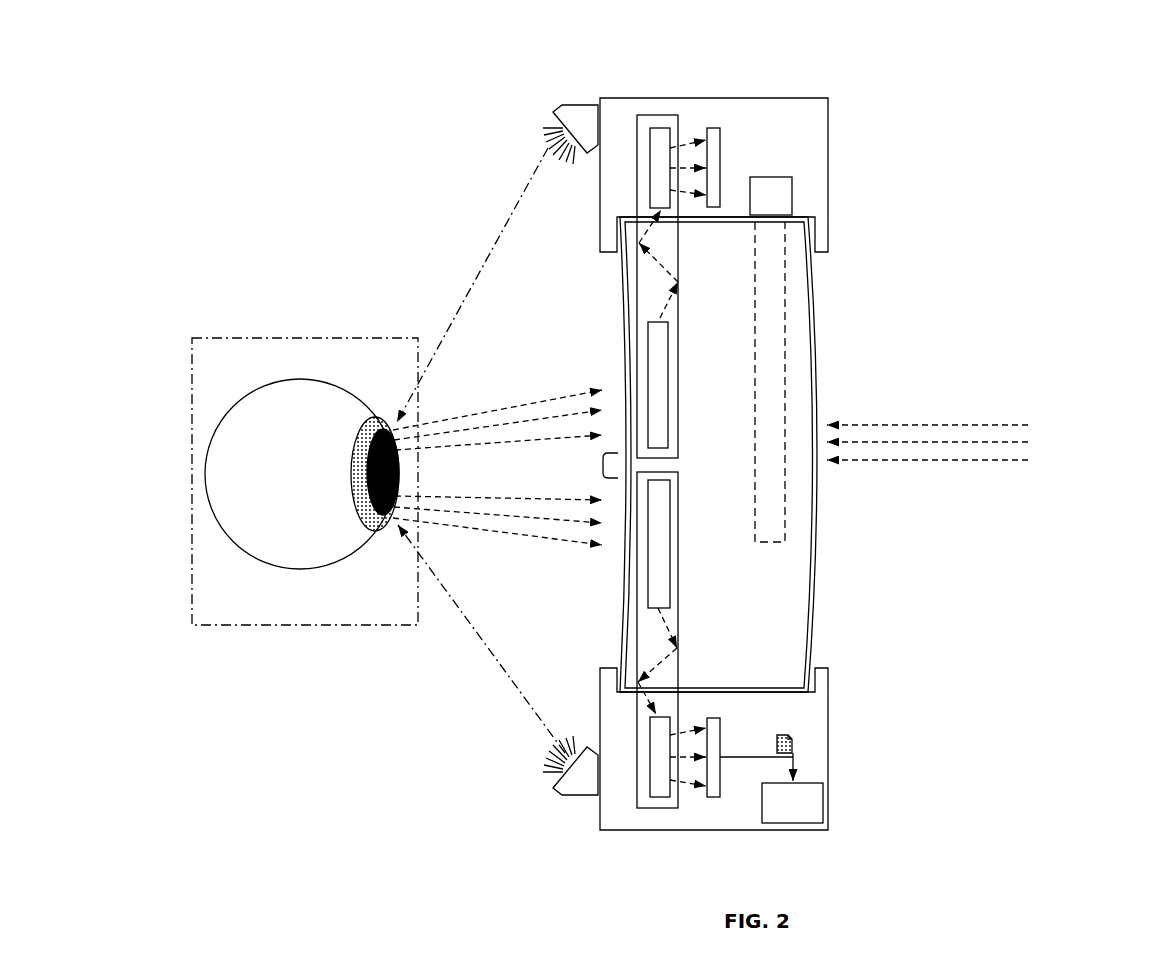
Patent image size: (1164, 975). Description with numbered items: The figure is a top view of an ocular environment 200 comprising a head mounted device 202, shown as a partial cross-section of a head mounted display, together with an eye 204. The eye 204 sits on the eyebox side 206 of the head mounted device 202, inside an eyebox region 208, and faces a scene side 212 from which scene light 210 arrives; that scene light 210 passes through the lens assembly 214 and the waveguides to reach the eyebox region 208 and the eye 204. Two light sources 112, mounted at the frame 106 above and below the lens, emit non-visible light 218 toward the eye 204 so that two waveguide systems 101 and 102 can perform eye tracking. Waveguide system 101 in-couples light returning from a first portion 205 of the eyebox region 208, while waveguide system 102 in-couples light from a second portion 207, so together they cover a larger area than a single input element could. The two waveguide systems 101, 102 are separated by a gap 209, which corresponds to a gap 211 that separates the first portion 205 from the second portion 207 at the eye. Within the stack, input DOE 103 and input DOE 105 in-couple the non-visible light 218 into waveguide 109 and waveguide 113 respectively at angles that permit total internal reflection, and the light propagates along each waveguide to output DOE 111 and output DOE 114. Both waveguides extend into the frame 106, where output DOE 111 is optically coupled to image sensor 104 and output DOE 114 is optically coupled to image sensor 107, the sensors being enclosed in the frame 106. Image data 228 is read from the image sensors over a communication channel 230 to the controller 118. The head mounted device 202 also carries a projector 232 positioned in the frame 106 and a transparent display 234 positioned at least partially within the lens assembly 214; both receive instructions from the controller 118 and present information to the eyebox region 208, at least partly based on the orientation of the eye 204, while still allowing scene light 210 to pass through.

The ocular environment 200 is at (731, 446).
The head mounted device 202 is at (905, 96).
The waveguide system 101 is at (649, 640).
The waveguide system 102 is at (690, 376).
The input DOE 103 is at (663, 583).
The image sensor 104 is at (713, 798).
The input DOE 105 is at (662, 356).
The frame 106 is at (714, 464).
The image sensor 107 is at (713, 135).
The waveguide 109 is at (643, 632).
The output DOE 111 is at (660, 790).
The light sources 112 is at (575, 104).
The waveguide 113 is at (646, 303).
The output DOE 114 is at (655, 133).
The controller 118 is at (792, 803).
The eye 204 is at (302, 474).
The first portion 205 is at (425, 482).
The eyebox side 206 is at (436, 262).
The second portion 207 is at (425, 383).
The eyebox region 208 is at (296, 625).
The gap 209 is at (603, 463).
The scene light 210 is at (983, 442).
The gap 211 is at (425, 451).
The scene side 212 is at (1002, 248).
The lens assembly 214 is at (718, 454).
The non-visible light 218 is at (490, 655).
The image data 228 is at (792, 743).
The communication channel 230 is at (738, 757).
The projector 232 is at (792, 197).
The display 234 is at (785, 278).